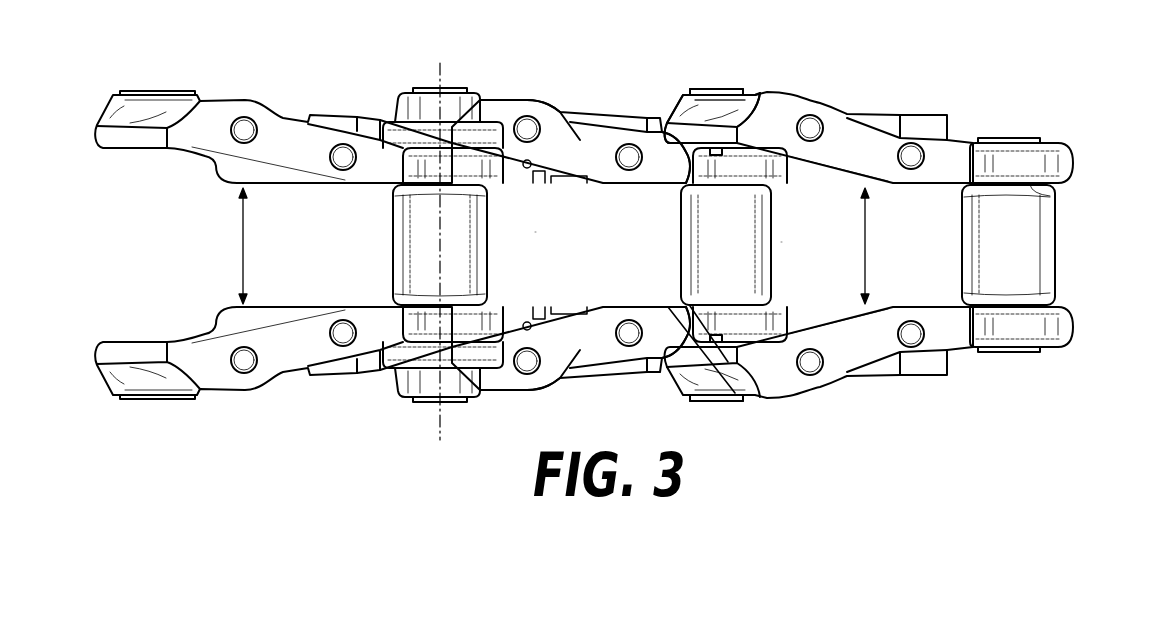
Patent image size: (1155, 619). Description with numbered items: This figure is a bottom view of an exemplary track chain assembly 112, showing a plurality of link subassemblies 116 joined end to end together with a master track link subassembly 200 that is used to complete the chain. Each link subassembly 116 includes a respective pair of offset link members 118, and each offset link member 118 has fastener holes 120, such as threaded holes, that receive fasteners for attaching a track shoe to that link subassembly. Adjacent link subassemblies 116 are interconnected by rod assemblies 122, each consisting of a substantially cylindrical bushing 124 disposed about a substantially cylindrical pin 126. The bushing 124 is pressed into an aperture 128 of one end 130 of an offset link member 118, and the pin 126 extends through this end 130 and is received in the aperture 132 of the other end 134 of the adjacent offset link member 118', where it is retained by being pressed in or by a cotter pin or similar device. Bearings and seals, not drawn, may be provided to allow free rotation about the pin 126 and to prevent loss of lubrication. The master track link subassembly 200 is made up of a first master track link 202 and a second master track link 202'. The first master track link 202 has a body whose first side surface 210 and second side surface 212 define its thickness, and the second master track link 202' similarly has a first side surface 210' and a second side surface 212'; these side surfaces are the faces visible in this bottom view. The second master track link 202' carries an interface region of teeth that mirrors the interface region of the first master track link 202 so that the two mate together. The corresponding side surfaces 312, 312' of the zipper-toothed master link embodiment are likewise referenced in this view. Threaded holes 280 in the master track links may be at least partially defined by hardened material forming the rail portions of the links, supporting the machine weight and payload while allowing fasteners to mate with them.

The chain assembly 112 is at (622, 238).
The link subassembly 116 is at (551, 246).
The offset link member 118 is at (534, 245).
The adjacent offset link member 118' is at (273, 369).
The fastener hole 120 is at (577, 208).
The rod assembly 122 is at (695, 219).
The bushing 124 is at (772, 245).
The pin 126 is at (590, 270).
The aperture 128 is at (719, 238).
The end of the offset link member 130 is at (753, 244).
The aperture of the other end 132 is at (712, 79).
The other end of the adjacent offset link member 134 is at (735, 233).
The master track link subassembly 200 is at (571, 232).
The first master track link 202 is at (520, 397).
The second master track link 202' is at (523, 82).
The first side surface 210 is at (633, 189).
The first side surface of the second master track link 210' is at (754, 371).
The second side surface 212 is at (611, 108).
The second side surface of the second master track link 212' is at (647, 383).
The threaded hole 280 is at (572, 235).
The second side surface 312 is at (555, 302).
The second side surface of the second master track link 312' is at (555, 187).